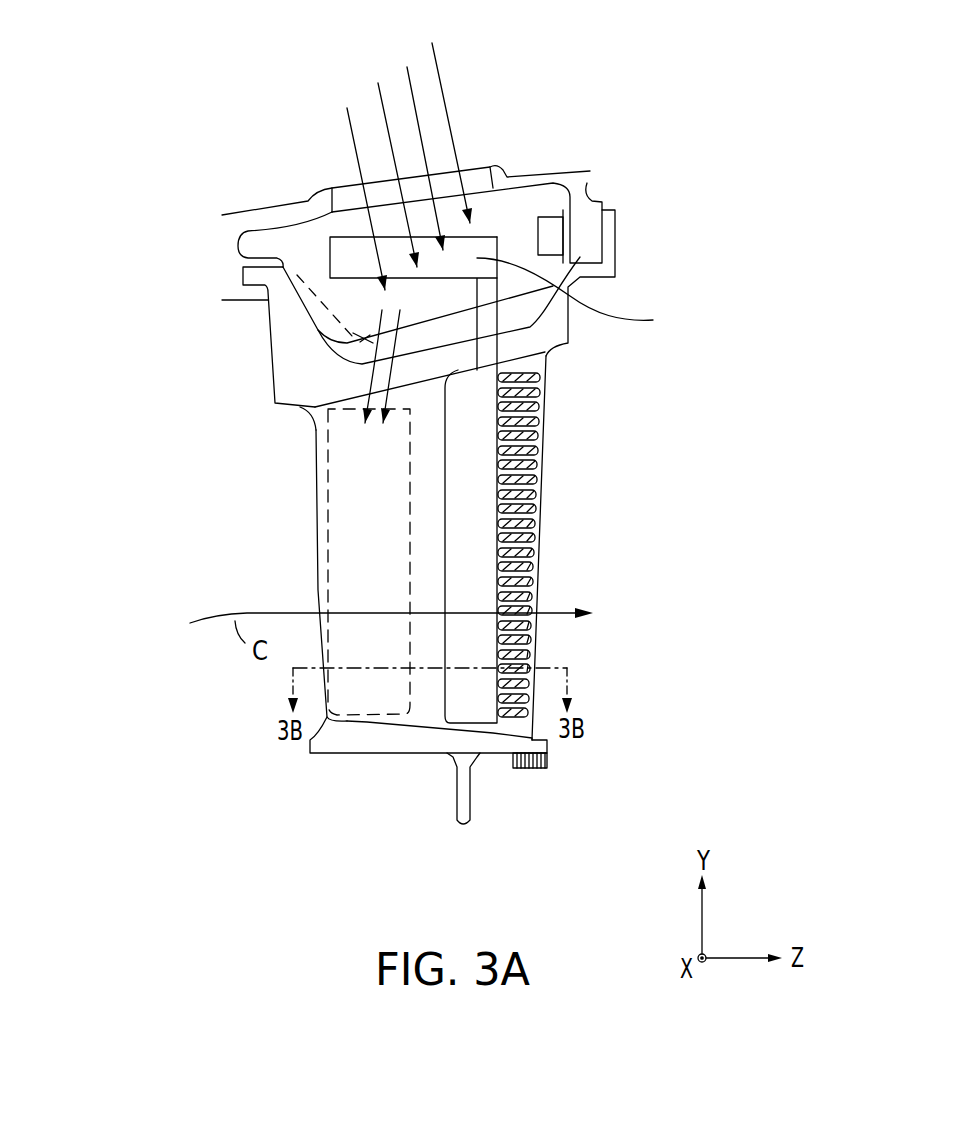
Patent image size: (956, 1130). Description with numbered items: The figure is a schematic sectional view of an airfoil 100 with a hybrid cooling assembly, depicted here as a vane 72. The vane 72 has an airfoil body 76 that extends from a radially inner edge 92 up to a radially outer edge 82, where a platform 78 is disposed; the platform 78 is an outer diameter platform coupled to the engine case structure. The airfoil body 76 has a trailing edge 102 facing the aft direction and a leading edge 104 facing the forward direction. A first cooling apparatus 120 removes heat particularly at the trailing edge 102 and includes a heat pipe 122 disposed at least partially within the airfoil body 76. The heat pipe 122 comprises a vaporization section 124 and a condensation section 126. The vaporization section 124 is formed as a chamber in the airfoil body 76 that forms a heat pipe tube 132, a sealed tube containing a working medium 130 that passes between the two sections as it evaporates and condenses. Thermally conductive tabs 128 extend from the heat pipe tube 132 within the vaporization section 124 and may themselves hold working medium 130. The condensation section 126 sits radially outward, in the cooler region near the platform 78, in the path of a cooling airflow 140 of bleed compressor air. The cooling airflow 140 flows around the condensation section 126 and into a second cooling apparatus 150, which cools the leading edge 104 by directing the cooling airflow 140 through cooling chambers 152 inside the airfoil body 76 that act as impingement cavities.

The airfoil 100 is at (314, 223).
The vane 72 is at (108, 165).
The airfoil body 76 is at (441, 537).
The platform 78 is at (282, 380).
The radially outer edge 82 is at (325, 424).
The radially inner edge 92 is at (420, 727).
The trailing edge 102 is at (547, 545).
The leading edge 104 is at (316, 545).
The first cooling apparatus 120 is at (560, 847).
The heat pipe 122 is at (717, 297).
The vaporization section 124 is at (643, 370).
The condensation section 126 is at (593, 298).
The tabs 128 is at (527, 483).
The working medium 130 is at (472, 527).
The heat pipe tube 132 is at (537, 571).
The cooling airflow 140 is at (443, 95).
The second cooling apparatus 150 is at (418, 800).
The cooling chambers 152 is at (340, 590).